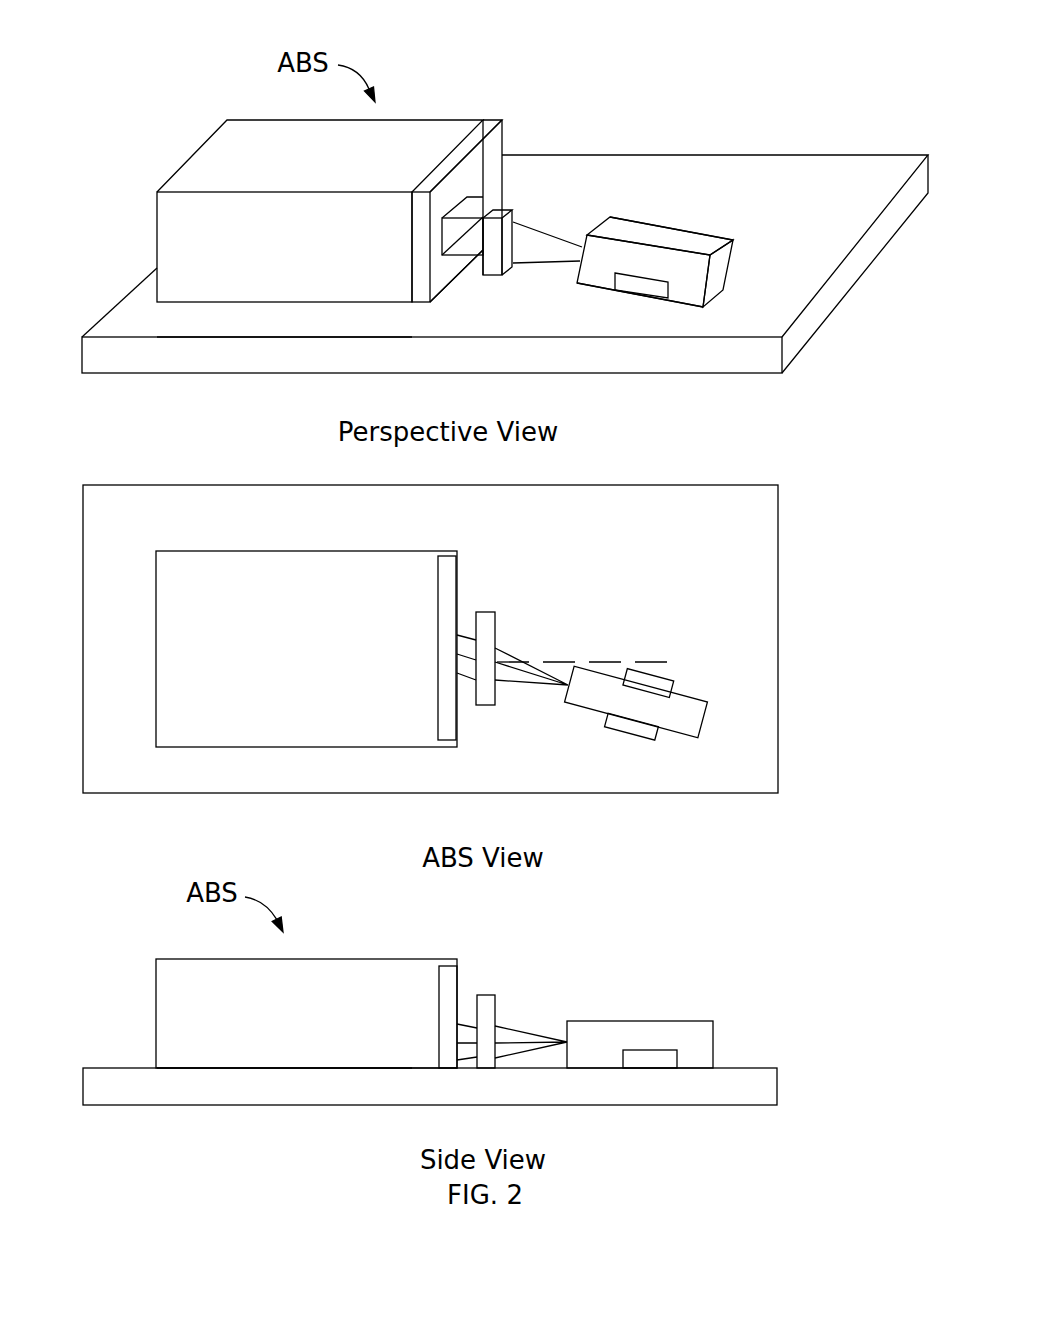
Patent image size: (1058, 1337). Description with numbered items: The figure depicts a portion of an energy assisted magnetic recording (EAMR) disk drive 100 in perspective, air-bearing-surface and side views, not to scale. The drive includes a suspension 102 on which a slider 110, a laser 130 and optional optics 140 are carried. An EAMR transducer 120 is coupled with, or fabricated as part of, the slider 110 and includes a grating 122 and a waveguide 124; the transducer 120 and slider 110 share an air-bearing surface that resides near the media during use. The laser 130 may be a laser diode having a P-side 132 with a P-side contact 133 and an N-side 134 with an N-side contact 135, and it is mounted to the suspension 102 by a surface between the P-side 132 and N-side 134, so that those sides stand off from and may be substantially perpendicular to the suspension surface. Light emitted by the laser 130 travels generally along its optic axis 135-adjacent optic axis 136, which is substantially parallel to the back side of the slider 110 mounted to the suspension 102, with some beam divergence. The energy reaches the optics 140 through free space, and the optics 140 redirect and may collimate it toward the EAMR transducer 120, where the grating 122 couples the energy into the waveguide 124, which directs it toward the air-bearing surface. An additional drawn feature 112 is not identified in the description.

The EAMR disk drive 100 is at (462, 41).
The suspension 102 is at (797, 357).
The slider 110 is at (157, 228).
The slider mounting surface of suspension 112 is at (191, 326).
The EAMR transducer 120 is at (500, 120).
The grating 122 is at (462, 180).
The waveguide 124 is at (465, 177).
The laser 130 is at (727, 272).
The P-side 132 is at (683, 327).
The P-side contact 133 is at (630, 296).
The N-side 134 is at (727, 218).
The N-side contact 135 is at (668, 662).
The optic axis 136 is at (523, 678).
The optics 140 is at (513, 213).